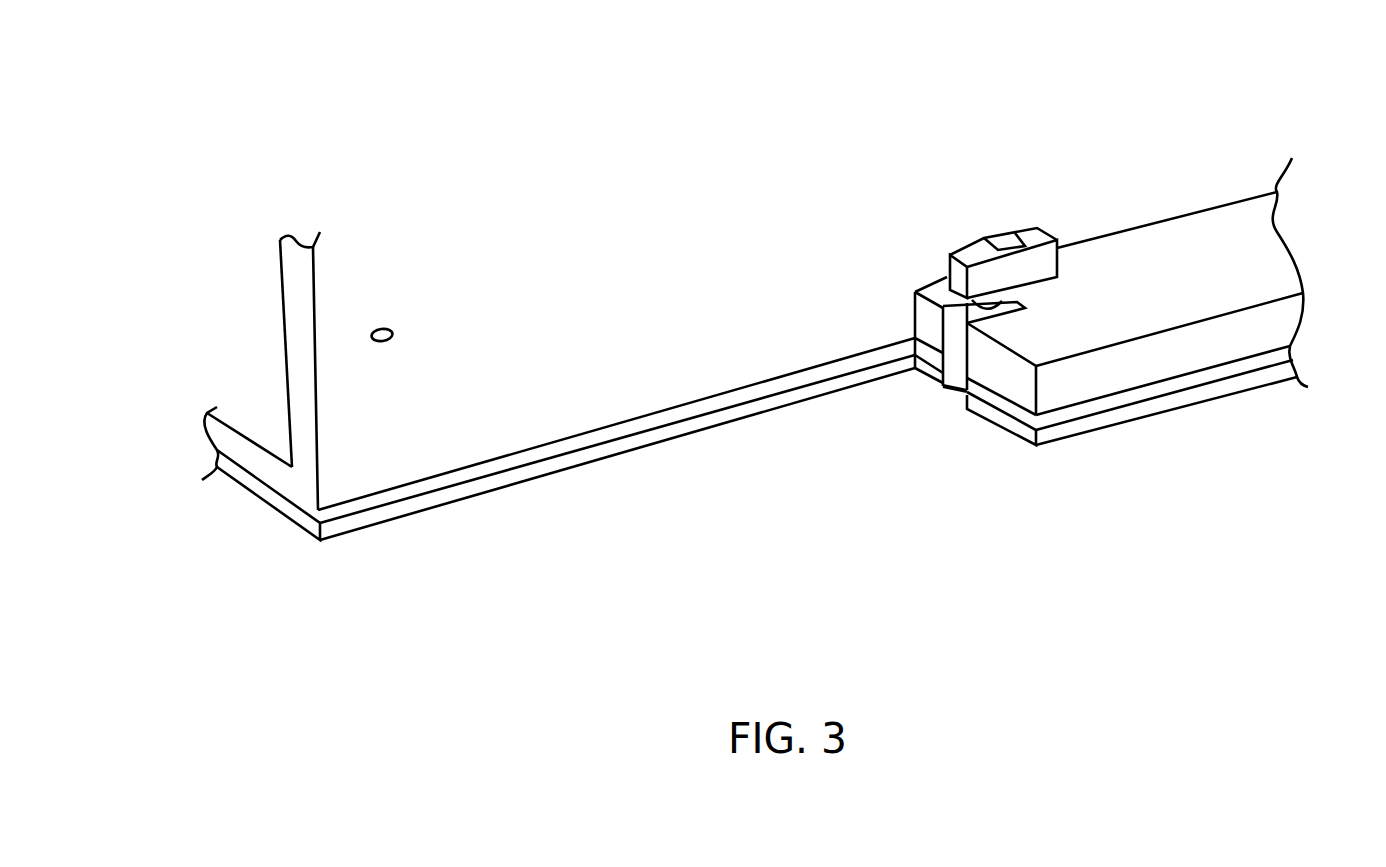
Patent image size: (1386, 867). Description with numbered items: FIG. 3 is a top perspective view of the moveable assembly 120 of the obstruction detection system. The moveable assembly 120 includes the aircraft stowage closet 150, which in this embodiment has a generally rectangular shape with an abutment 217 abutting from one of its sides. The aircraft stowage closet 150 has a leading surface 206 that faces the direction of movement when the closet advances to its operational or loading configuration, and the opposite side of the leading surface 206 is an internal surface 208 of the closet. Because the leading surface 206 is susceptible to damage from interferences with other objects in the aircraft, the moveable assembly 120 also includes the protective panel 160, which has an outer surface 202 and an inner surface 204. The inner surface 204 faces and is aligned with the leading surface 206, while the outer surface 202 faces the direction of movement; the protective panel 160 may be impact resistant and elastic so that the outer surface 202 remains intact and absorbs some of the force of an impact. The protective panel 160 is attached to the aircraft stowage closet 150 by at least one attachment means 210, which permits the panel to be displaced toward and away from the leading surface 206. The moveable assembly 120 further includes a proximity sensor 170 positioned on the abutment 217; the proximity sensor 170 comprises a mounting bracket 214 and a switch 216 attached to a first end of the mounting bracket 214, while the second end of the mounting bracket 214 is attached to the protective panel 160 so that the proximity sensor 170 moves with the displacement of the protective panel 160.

The moveable assembly 120 is at (135, 160).
The aircraft stowage closet 150 is at (302, 278).
The protective panel 160 is at (394, 510).
The proximity sensor 170 is at (928, 266).
The outer surface 202 is at (744, 420).
The inner surface 204 is at (810, 383).
The leading surface 206 is at (1121, 397).
The internal surface 208 is at (1290, 291).
The attachment means 210 is at (392, 331).
The mounting bracket 214 is at (958, 372).
The switch 216 is at (1007, 268).
The abutment 217 is at (1262, 378).